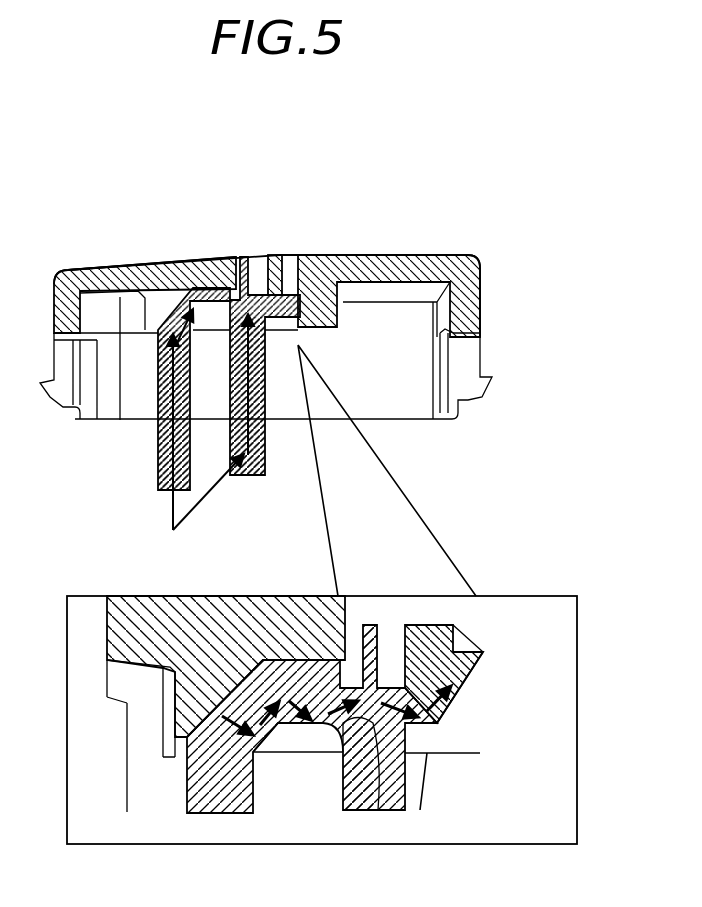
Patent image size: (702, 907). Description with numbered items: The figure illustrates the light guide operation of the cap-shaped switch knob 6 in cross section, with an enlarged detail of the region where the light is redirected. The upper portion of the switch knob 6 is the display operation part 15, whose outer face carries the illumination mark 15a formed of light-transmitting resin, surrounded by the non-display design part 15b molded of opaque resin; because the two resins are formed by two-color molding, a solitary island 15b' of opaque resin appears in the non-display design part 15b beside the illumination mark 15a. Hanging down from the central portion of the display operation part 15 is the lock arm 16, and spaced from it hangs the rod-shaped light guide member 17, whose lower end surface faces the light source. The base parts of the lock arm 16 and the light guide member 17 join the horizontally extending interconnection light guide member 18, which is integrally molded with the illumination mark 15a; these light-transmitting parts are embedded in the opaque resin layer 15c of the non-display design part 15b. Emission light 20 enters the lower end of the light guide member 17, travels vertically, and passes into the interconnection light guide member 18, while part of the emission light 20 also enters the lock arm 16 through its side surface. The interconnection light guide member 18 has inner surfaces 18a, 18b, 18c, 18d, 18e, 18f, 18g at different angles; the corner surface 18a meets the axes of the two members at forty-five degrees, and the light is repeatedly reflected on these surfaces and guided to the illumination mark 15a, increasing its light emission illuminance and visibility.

The switch knob 6 is at (482, 250).
The display operation part 15 is at (385, 255).
The illumination mark 15a is at (243, 256).
The non-display design part 15b is at (143, 238).
The solitary island 15b' is at (349, 431).
The opaque resin layer 15c is at (337, 325).
The lock arm 16 is at (265, 465).
The light guide member 17 is at (158, 475).
The interconnection light guide member 18 is at (160, 257).
The light guide member inner surface 18a is at (205, 663).
The light guide member inner surface 18b is at (262, 748).
The light guide member inner surface 18c is at (300, 752).
The light guide member inner surface 18d is at (366, 760).
The light guide member inner surface 18e is at (375, 672).
The light guide member inner surface 18f is at (437, 727).
The light guide member inner surface 18g is at (467, 697).
The emission light 20 is at (158, 445).